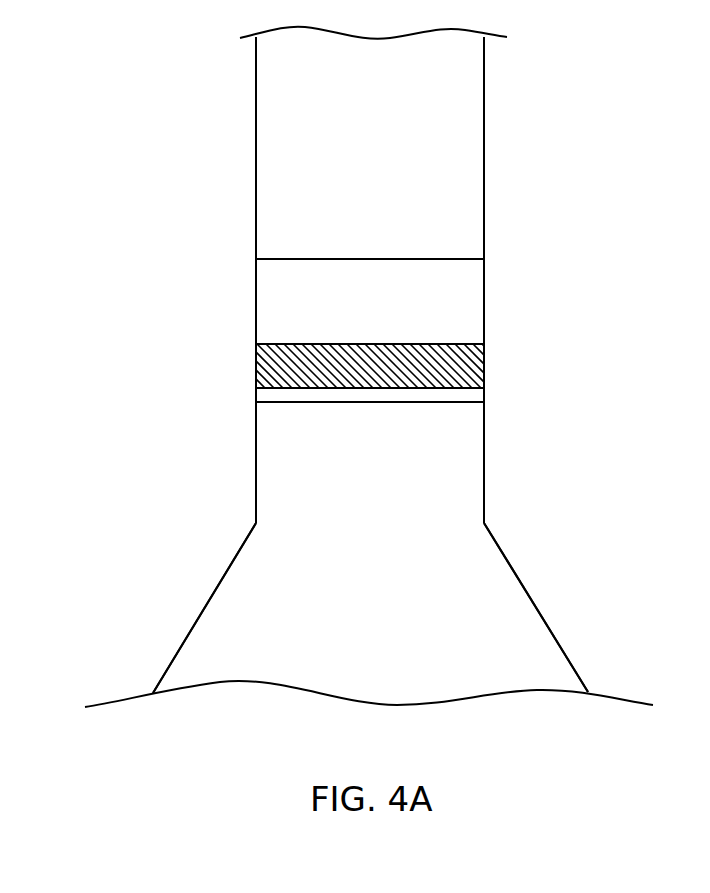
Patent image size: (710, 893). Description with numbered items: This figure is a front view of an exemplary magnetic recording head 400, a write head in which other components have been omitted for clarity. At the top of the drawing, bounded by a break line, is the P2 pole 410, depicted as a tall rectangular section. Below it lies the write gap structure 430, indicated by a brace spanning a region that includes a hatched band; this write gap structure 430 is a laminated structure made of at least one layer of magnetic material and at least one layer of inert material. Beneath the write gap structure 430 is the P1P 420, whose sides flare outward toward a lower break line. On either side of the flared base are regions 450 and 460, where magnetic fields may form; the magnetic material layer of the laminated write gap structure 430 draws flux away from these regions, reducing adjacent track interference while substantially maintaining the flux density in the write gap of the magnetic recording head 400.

The magnetic recording head 400 is at (183, 128).
The P2 pole 410 is at (370, 148).
The P1P 420 is at (370, 547).
The write gap structure 430 is at (248, 262).
The region 450 is at (202, 593).
The region 460 is at (540, 592).